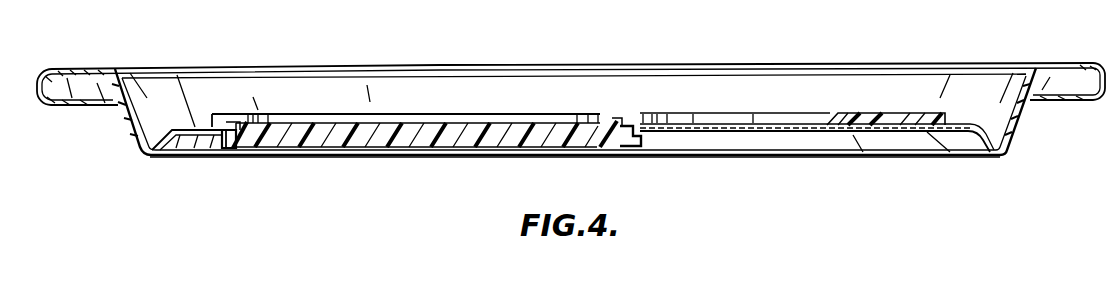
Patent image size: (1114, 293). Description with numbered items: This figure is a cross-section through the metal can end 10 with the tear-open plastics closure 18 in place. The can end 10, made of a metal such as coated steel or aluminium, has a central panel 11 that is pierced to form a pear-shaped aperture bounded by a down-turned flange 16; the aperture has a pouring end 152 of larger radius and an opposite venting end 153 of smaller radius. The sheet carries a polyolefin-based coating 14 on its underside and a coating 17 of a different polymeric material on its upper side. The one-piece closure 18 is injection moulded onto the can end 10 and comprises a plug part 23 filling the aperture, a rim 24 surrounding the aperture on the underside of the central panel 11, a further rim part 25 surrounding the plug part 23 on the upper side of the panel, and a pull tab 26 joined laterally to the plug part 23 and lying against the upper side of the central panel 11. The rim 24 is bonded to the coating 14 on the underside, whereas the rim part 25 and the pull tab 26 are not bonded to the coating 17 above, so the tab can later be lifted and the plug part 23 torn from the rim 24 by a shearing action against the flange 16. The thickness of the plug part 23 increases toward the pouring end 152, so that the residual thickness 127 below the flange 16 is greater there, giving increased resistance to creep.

The can end 10 is at (161, 63).
The central panel 11 is at (718, 126).
The coating 14 is at (767, 132).
The down-turned flange 16 is at (240, 130).
The coating 17 is at (782, 125).
The tear-open plastics closure 18 is at (403, 113).
The plug part 23 is at (412, 135).
The rim 24 is at (218, 135).
The further rim part 25 is at (630, 130).
The pull tab 26 is at (910, 113).
The residual thickness 127 is at (227, 138).
The pouring end 152 is at (236, 119).
The venting end 153 is at (618, 111).